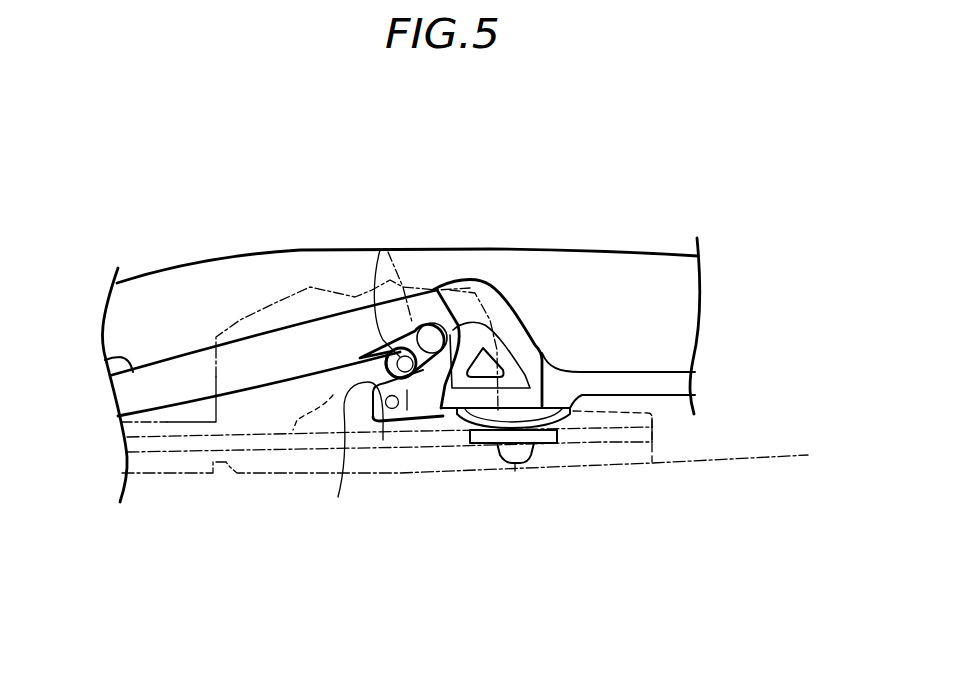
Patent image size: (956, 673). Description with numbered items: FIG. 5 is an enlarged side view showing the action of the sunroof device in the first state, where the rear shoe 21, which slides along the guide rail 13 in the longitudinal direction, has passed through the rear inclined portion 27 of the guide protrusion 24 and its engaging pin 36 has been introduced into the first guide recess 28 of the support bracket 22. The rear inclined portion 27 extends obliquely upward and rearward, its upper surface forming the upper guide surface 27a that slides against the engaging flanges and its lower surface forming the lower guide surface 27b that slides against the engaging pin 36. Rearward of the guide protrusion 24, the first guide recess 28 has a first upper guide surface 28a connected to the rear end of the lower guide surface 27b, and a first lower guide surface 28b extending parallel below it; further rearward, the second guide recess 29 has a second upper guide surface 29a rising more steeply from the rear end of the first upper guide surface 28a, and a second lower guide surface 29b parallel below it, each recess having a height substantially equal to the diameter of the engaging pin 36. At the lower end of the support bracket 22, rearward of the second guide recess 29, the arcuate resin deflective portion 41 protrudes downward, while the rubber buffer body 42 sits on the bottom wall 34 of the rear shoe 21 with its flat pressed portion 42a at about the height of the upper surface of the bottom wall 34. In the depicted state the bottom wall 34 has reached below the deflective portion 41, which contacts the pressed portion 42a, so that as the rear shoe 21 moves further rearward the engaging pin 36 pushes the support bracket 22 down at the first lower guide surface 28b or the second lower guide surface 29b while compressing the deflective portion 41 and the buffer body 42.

The guide rail 13 is at (740, 458).
The rear shoe 21 is at (653, 468).
The support bracket 22 is at (627, 239).
The guide protrusion 24 is at (105, 360).
The rear inclined portion 27 is at (237, 357).
The upper guide surface 27a is at (278, 333).
The lower guide surface 27b is at (270, 385).
The first guide recess 28 is at (351, 455).
The first upper guide surface 28a is at (377, 362).
The first lower guide surface 28b is at (383, 440).
The second guide recess 29 is at (495, 325).
The second upper guide surface 29a is at (450, 290).
The second lower guide surface 29b is at (441, 413).
The bottom wall 34 is at (320, 398).
The engaging pin 36 is at (385, 250).
The deflective portion 41 is at (458, 415).
The buffer body 42 is at (516, 466).
The pressed portion 42a is at (557, 436).